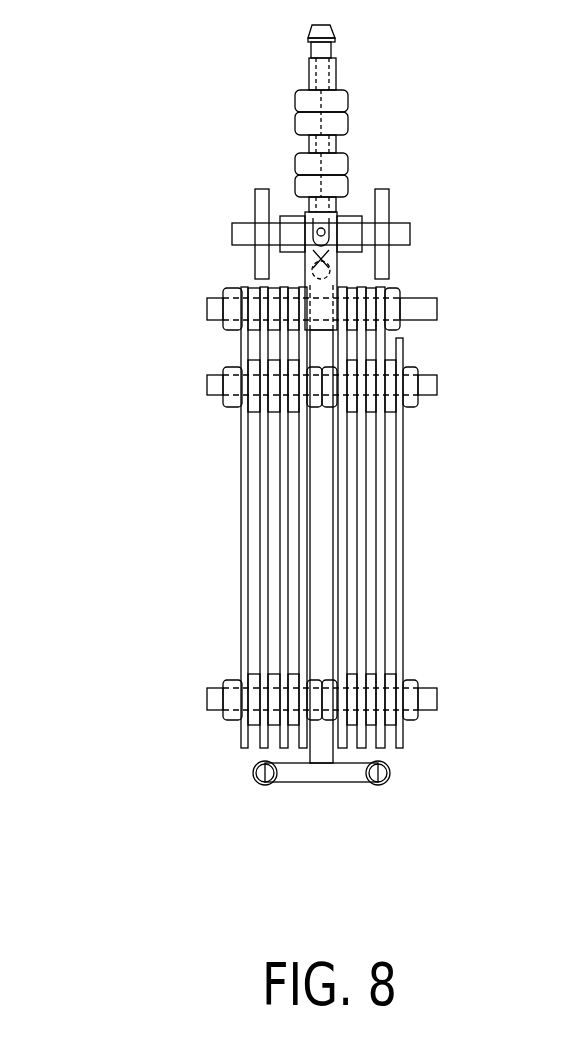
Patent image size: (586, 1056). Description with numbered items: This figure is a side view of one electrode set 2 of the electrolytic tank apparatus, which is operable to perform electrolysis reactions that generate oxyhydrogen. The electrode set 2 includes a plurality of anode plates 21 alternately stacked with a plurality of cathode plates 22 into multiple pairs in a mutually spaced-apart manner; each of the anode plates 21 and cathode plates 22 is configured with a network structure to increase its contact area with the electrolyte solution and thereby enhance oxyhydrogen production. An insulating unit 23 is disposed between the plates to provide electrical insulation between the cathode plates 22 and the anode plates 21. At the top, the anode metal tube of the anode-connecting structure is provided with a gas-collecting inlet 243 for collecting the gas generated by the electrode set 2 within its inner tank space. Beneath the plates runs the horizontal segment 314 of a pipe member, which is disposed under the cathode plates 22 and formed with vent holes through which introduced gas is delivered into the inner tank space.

The electrode set 2 is at (278, 437).
The anode plates 21 is at (362, 743).
The cathode plates 22 is at (342, 647).
The insulating unit 23 is at (370, 368).
The gas-collecting inlet 243 is at (412, 233).
The horizontal segment 314 is at (265, 773).